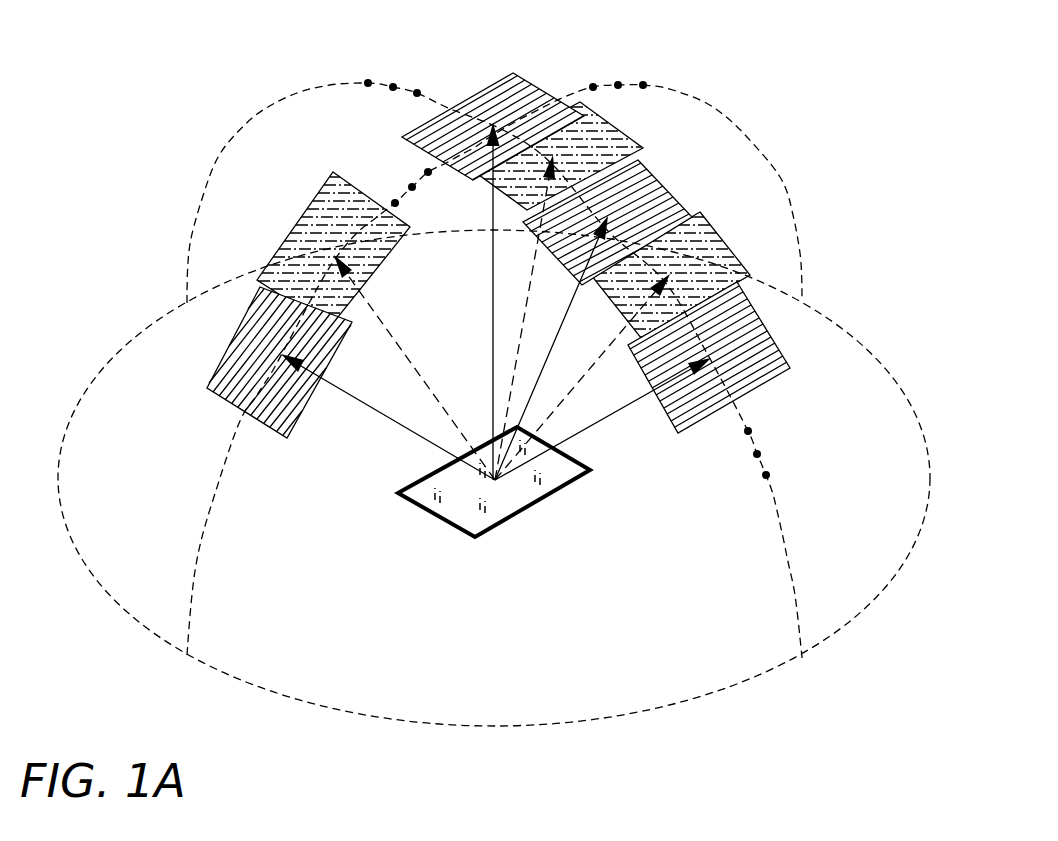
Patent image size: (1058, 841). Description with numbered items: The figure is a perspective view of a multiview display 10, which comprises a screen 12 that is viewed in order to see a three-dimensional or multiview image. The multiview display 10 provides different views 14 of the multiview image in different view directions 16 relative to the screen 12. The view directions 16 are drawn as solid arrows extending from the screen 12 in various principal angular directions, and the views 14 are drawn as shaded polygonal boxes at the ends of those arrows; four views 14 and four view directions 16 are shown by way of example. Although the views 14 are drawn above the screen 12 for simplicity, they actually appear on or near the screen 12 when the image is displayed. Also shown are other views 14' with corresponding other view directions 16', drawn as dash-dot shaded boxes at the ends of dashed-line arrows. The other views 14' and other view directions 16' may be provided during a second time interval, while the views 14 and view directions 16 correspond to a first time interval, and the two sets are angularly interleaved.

The multiview display 10 is at (824, 144).
The screen 12 is at (534, 528).
The views 14 is at (492, 265).
The other views 14' is at (497, 183).
The view directions 16 is at (496, 308).
The other view directions 16' is at (502, 317).